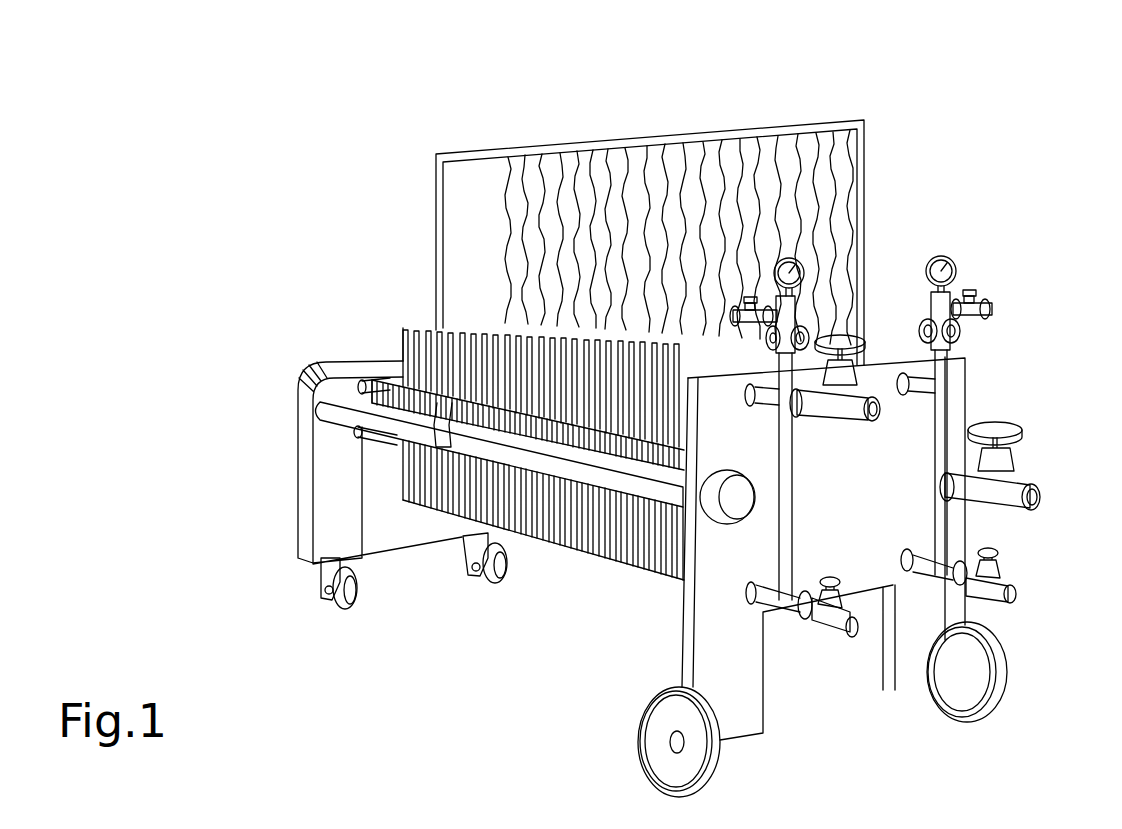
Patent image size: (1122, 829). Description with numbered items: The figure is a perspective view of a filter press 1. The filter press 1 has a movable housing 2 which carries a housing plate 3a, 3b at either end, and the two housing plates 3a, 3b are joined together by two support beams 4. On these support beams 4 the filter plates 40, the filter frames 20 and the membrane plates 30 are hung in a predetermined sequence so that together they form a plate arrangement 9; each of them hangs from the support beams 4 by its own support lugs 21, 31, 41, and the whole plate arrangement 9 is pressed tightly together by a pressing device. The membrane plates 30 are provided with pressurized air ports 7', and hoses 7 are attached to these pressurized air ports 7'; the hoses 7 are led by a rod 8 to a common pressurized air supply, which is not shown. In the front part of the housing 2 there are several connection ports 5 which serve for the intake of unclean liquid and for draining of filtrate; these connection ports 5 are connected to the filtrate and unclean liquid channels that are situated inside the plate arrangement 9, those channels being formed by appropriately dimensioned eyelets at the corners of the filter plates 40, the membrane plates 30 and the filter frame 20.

The filter press 1 is at (857, 371).
The movable housing 2 is at (299, 460).
The housing plate 3a is at (822, 587).
The housing plate 3b is at (339, 518).
The support beam 4 is at (707, 378).
The connection port 5 is at (917, 503).
The hose 7 is at (656, 237).
The pressurized air port 7' is at (433, 162).
The rod 8 is at (650, 195).
The plate arrangement 9 is at (523, 626).
The filter frame 20 is at (470, 271).
The support lug 21 is at (385, 579).
The membrane plate 30 is at (462, 304).
The support lug 31 is at (487, 563).
The filter plate 40 is at (389, 219).
The support lug 41 is at (412, 592).